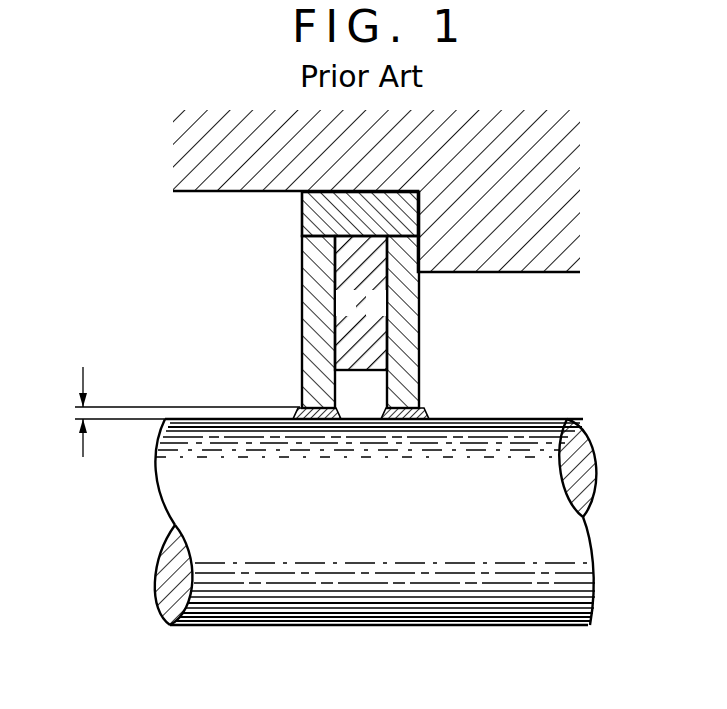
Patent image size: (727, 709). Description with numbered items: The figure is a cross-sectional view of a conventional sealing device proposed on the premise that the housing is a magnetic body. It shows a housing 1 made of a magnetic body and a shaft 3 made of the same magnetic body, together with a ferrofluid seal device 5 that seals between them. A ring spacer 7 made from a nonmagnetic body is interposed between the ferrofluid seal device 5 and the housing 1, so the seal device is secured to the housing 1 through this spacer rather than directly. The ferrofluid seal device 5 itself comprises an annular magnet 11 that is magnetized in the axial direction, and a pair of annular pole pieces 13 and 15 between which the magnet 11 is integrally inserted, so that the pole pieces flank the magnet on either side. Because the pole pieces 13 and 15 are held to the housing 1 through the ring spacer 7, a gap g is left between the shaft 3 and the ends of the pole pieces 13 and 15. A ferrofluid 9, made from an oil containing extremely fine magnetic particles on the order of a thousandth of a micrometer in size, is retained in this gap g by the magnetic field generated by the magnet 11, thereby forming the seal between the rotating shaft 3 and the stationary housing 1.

The housing 1 is at (572, 167).
The shaft 3 is at (535, 435).
The ferrofluid seal device 5 is at (430, 311).
The ring spacer 7 is at (312, 220).
The ferrofluid 9 is at (425, 413).
The annular magnet 11 is at (348, 278).
The annular pole piece 13 is at (312, 336).
The annular pole piece 15 is at (410, 360).
The gap g is at (46, 398).